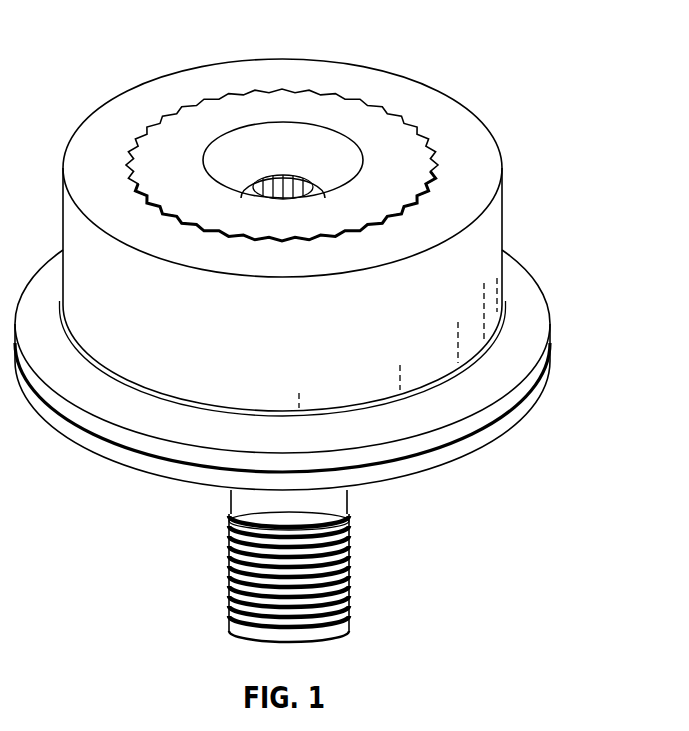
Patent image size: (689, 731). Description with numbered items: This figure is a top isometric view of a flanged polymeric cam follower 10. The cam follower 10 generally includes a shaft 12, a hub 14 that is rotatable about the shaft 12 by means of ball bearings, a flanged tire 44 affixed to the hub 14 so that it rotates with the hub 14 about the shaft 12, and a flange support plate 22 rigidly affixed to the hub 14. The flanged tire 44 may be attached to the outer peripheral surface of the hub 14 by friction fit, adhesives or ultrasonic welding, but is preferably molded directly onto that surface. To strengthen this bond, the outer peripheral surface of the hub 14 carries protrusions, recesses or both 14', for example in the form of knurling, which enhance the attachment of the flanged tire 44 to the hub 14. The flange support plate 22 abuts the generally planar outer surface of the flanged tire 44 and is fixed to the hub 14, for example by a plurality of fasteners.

The flanged cam follower 10 is at (149, 70).
The shaft 12 is at (322, 501).
The hub 14 is at (297, 101).
The protrusions, recesses or both protrusions and recesses 14' is at (338, 165).
The flange support plate 22 is at (527, 399).
The flanged tire 44 is at (478, 243).